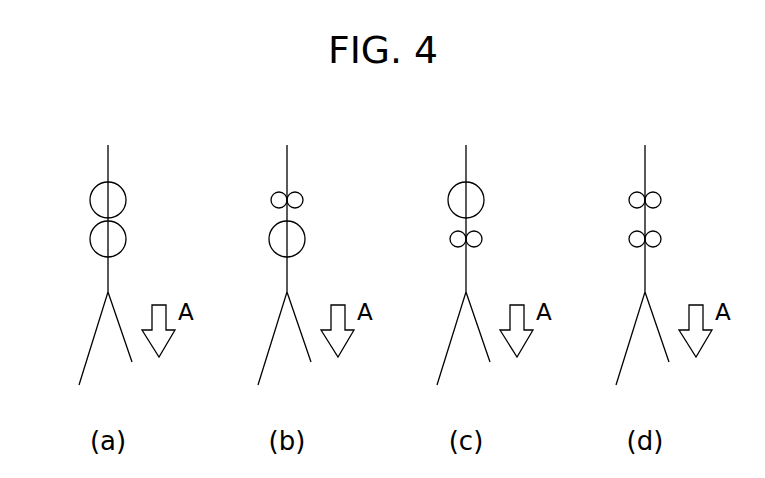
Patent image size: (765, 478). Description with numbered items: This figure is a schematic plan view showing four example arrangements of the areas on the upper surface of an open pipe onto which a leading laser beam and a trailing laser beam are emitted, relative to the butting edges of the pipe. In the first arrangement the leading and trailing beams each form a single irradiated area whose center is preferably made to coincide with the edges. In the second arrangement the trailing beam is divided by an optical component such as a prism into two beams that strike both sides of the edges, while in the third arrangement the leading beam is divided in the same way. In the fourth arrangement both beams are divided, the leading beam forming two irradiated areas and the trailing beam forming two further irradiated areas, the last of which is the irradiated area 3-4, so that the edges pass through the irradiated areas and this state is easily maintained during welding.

The irradiated area 3-4 is at (675, 203).